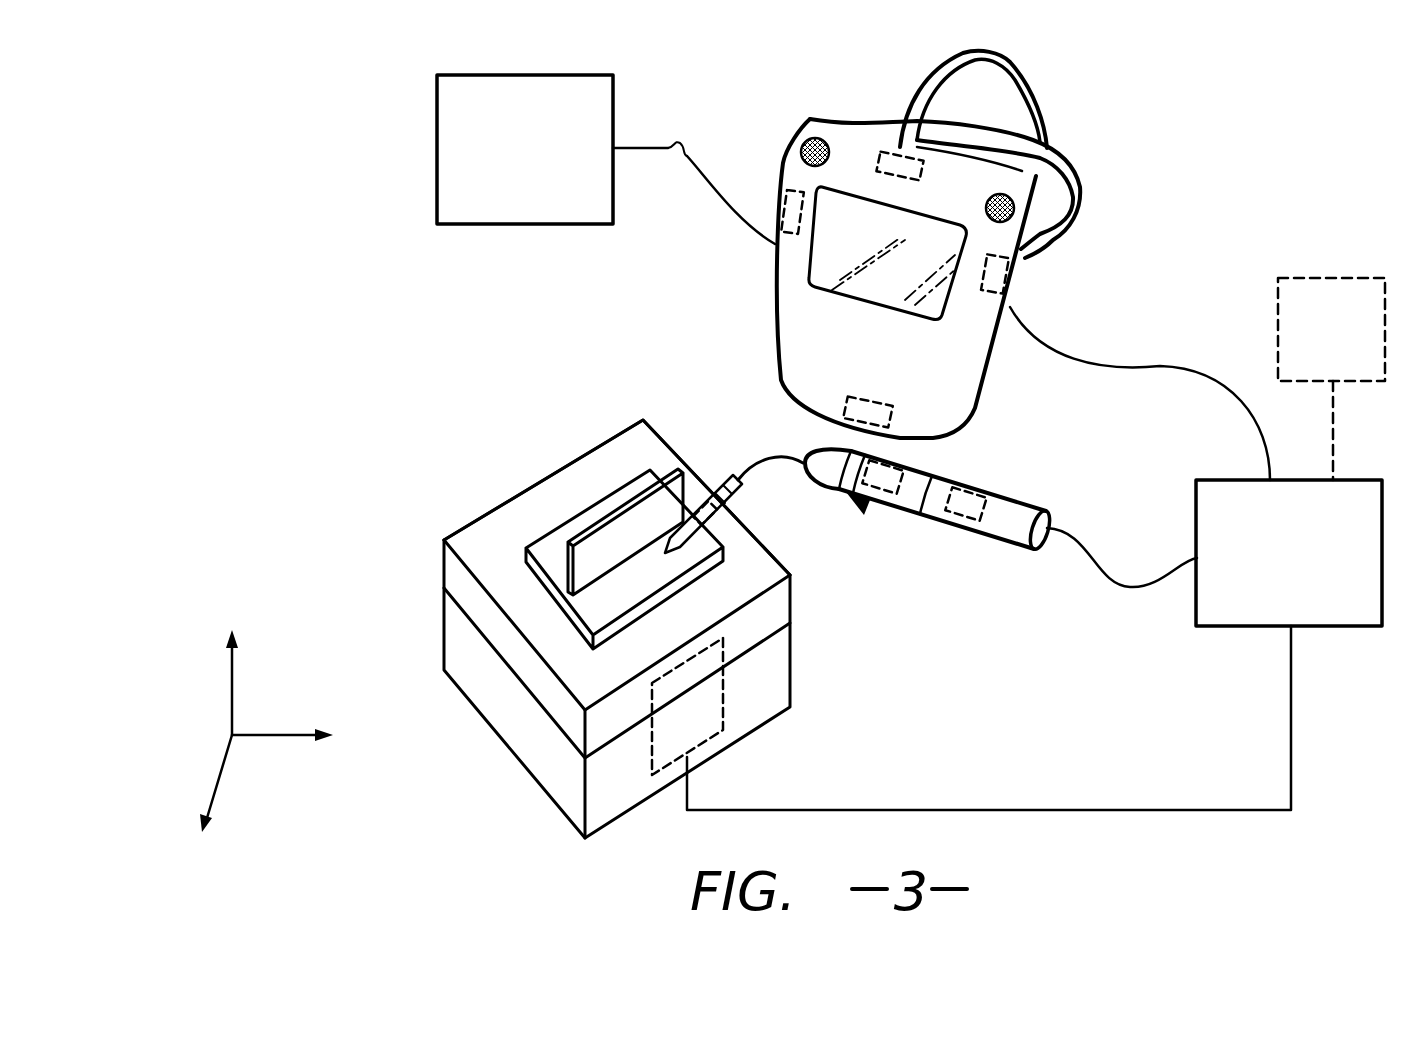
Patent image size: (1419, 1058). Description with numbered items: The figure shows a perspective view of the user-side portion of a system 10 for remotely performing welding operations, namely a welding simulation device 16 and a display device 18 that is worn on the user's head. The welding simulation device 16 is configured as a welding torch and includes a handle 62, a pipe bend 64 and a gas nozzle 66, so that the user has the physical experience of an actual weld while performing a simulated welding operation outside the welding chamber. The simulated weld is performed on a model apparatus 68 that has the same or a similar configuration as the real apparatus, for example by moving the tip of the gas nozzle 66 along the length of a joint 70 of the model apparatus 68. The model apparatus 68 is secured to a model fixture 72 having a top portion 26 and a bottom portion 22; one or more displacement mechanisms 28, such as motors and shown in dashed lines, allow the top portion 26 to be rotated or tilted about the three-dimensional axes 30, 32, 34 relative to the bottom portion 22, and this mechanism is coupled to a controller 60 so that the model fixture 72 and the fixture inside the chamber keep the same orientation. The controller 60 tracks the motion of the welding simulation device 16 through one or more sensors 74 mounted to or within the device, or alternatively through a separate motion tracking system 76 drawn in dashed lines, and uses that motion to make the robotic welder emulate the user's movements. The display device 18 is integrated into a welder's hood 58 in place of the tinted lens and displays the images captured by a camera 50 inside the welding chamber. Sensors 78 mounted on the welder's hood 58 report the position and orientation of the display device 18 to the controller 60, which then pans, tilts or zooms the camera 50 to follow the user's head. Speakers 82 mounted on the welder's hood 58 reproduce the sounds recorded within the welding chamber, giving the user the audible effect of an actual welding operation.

The system 10 is at (1231, 197).
The welding simulation device 16 is at (1030, 482).
The display device 18 is at (823, 262).
The bottom portion 22 is at (500, 702).
The top portion 26 is at (458, 566).
The displacement mechanism 28 is at (727, 697).
The three-dimensional axis 30 is at (275, 732).
The three-dimensional axis 32 is at (218, 773).
The three-dimensional axis 34 is at (232, 685).
The camera 50 is at (606, 159).
The welder's hood 58 is at (824, 112).
The controller 60 is at (1034, 558).
The handle 62 is at (1000, 545).
The pipe bend 64 is at (758, 462).
The gas nozzle 66 is at (736, 500).
The model apparatus 68 is at (596, 486).
The joint 70 is at (620, 567).
The model fixture 72 is at (500, 494).
The sensors 74 is at (703, 503).
The motion tracking system 76 is at (1331, 379).
The sensors 78 is at (880, 157).
The speakers 82 is at (801, 146).